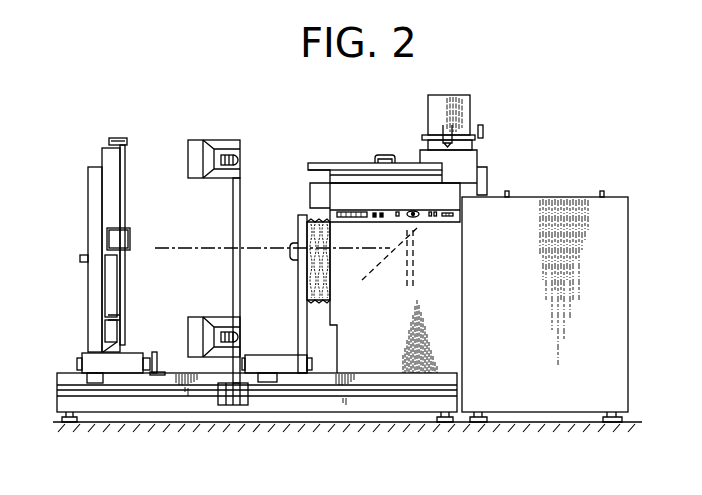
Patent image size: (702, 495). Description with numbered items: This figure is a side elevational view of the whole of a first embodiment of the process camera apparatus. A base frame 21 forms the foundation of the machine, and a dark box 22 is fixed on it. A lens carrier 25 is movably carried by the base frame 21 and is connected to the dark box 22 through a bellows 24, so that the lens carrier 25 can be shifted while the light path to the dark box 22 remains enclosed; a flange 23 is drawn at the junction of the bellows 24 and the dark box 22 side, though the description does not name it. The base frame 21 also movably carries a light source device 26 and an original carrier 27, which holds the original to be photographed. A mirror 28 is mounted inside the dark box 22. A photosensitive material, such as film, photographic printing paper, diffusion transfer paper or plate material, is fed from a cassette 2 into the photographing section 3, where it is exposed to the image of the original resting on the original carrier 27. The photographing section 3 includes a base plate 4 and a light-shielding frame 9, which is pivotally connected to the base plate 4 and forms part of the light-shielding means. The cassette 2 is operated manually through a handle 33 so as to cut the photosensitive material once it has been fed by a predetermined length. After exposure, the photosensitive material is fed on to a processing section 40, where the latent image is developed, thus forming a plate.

The cassette 2 is at (472, 106).
The photographing section 3 is at (402, 193).
The base plate 4 is at (347, 163).
The light-shielding frame 9 is at (322, 163).
The base frame 21 is at (288, 413).
The dark box 22 is at (390, 365).
The flange 23 is at (293, 260).
The bellows 24 is at (320, 301).
The lens carrier 25 is at (267, 355).
The light source device 26 is at (222, 317).
The original carrier 27 is at (132, 352).
The mirror 28 is at (399, 300).
The handle 33 is at (483, 132).
The processing section 40 is at (563, 197).